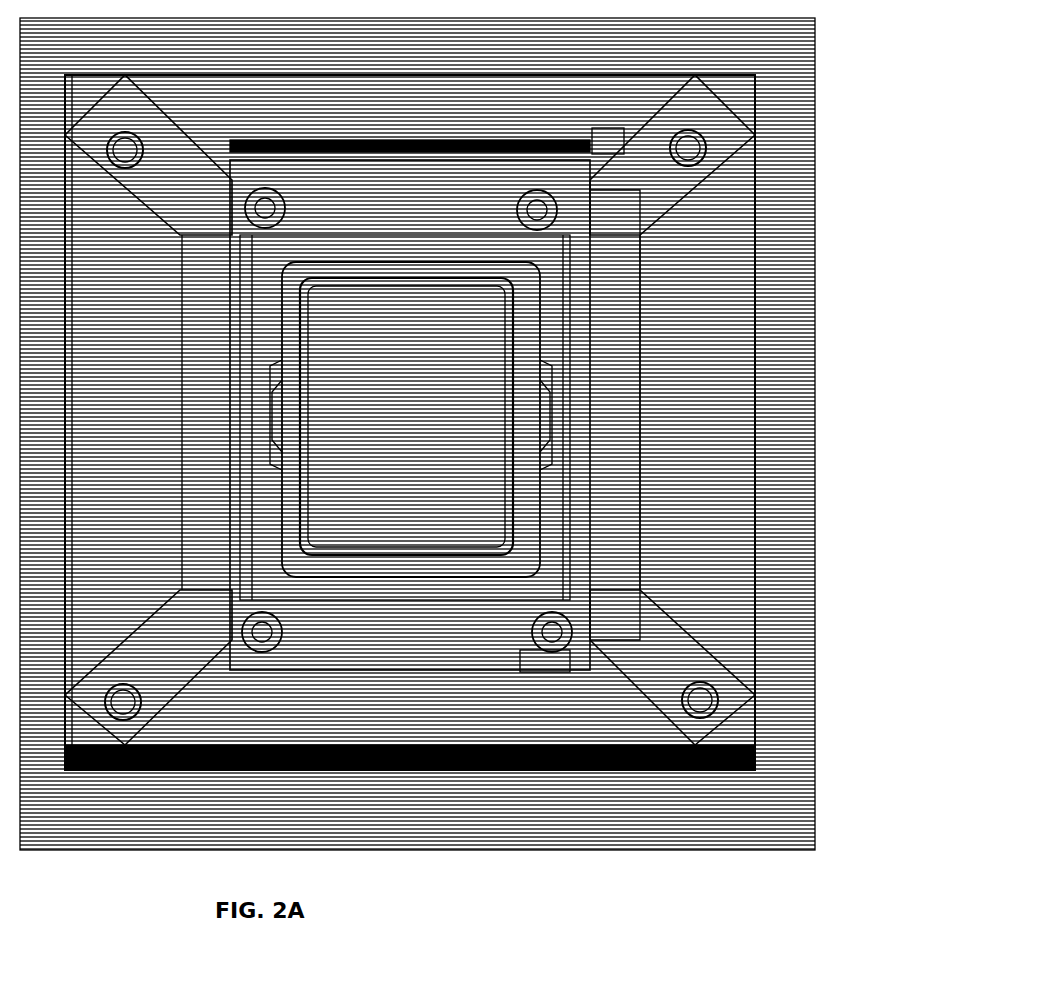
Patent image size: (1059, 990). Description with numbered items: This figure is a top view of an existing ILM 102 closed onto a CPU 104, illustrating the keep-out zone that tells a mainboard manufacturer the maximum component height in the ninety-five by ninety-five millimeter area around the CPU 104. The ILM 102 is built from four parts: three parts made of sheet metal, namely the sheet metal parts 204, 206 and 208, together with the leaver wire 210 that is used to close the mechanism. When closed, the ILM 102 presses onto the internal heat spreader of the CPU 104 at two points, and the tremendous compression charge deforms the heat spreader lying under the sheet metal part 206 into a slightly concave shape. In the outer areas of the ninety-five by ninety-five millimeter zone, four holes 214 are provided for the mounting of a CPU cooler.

The ILM 102 is at (584, 530).
The CPU 104 is at (552, 420).
The sheet metal part 204 is at (557, 326).
The sheet metal part 206 is at (447, 532).
The sheet metal part 208 is at (548, 667).
The leaver wire 210 is at (614, 373).
The holes 214 is at (130, 151).